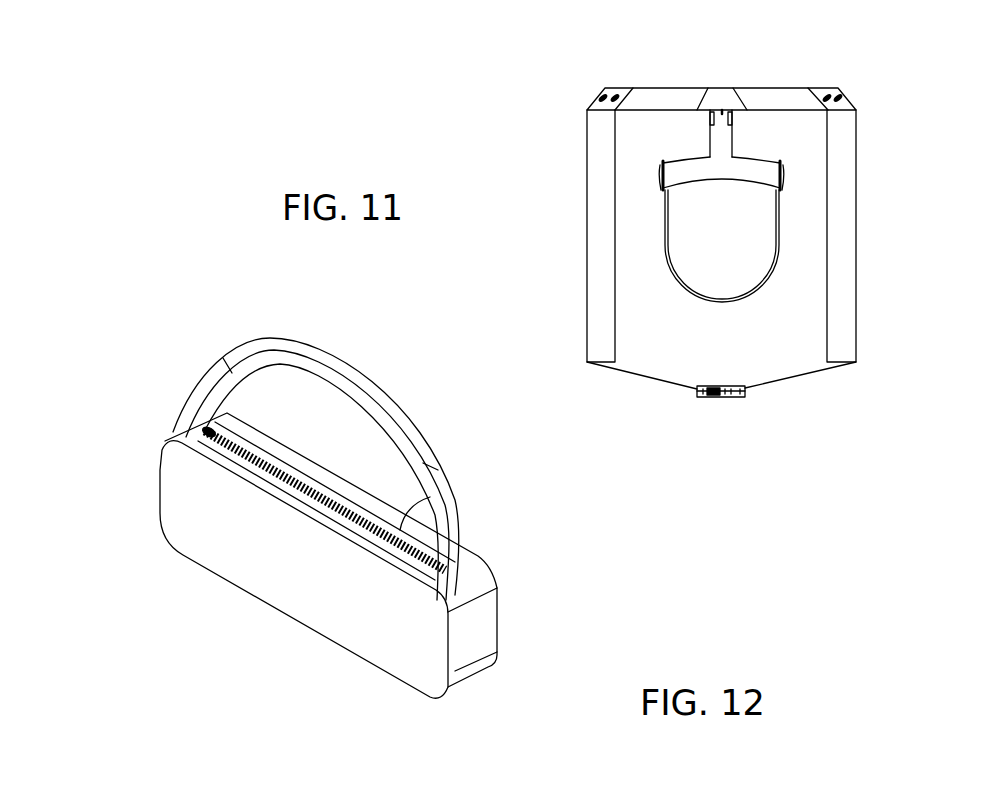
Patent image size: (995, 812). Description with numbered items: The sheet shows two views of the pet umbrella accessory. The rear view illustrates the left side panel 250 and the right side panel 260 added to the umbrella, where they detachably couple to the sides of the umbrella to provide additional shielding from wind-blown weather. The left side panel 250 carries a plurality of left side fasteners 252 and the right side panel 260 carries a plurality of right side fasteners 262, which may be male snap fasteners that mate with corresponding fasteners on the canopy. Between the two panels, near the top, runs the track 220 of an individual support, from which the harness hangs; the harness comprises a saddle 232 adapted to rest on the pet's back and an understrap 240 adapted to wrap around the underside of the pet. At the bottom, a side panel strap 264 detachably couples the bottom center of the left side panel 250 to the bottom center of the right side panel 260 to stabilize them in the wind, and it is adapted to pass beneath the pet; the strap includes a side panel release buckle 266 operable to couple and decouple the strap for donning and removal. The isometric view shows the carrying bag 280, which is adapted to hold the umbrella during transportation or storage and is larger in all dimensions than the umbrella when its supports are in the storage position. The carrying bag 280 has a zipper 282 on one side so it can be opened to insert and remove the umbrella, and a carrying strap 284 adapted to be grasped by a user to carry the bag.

In FIG. 12, the track 220 is at (757, 98).
In FIG. 12, the left side fasteners 252 is at (615, 96).
In FIG. 12, the right side fasteners 262 is at (828, 96).
In FIG. 12, the saddle 232 is at (672, 173).
In FIG. 12, the understrap 240 is at (780, 218).
In FIG. 12, the left side panel 250 is at (587, 250).
In FIG. 12, the right side panel 260 is at (856, 238).
In FIG. 12, the side panel strap 264 is at (813, 370).
In FIG. 12, the side panel release buckle 266 is at (722, 396).
In FIG. 11, the carrying bag 280 is at (152, 325).
In FIG. 11, the zipper 282 is at (445, 497).
In FIG. 11, the carrying strap 284 is at (302, 343).